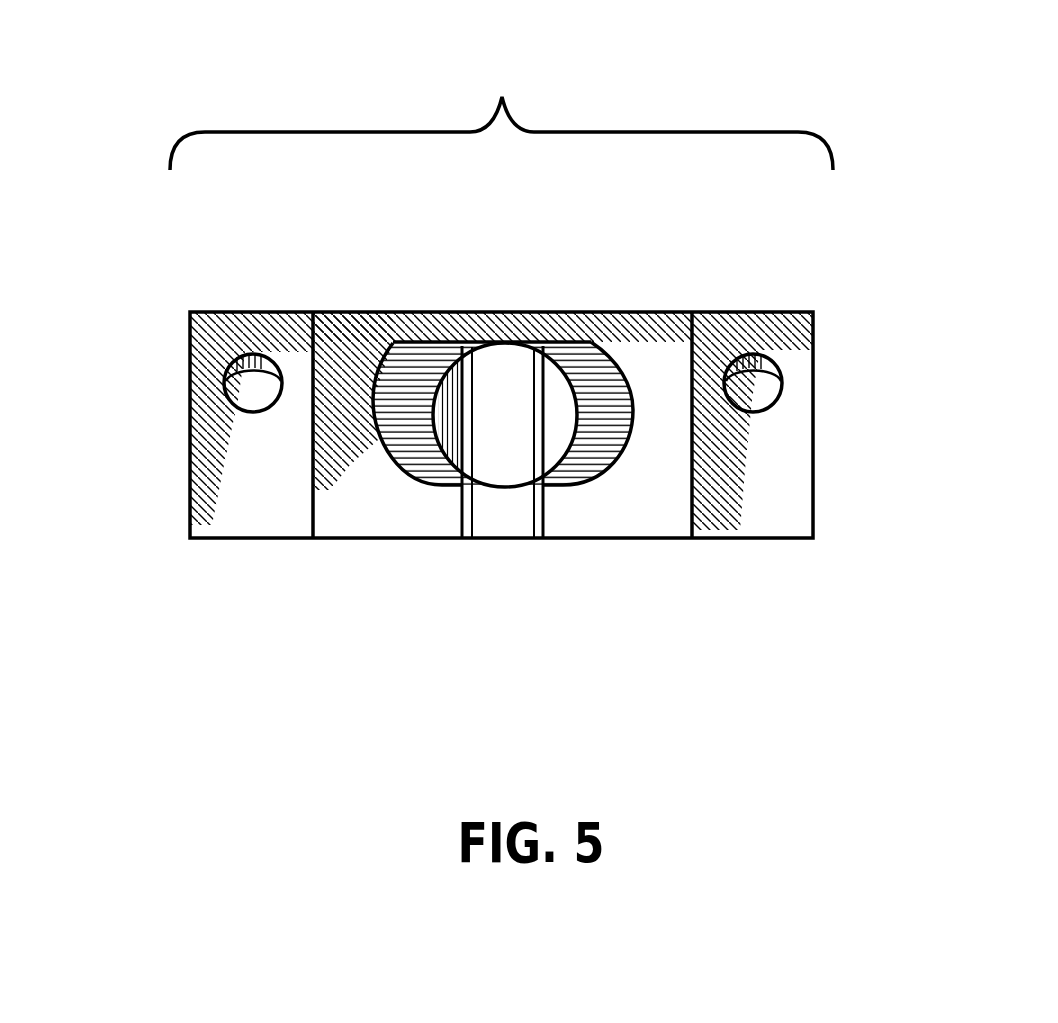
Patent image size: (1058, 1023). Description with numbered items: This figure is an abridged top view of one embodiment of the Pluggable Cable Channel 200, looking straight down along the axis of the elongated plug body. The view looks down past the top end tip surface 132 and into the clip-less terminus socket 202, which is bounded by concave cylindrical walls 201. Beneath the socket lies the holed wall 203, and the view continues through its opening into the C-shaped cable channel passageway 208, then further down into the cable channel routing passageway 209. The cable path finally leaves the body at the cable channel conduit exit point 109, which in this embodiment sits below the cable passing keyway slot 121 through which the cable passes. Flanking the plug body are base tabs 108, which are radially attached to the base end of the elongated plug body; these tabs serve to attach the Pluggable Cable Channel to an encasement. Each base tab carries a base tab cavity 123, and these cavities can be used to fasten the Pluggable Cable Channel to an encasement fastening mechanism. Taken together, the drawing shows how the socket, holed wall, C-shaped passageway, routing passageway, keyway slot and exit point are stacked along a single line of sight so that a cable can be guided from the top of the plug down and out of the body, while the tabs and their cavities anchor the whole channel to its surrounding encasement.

The swivel coupling assembly 200 is at (501, 105).
The concave cylindrical walls 201 is at (368, 390).
The clip-less terminus socket 202 is at (437, 363).
The holed wall 203 is at (405, 343).
The C-shaped cable channel passageway 208 is at (588, 356).
The cable channel routing passageway 209 is at (500, 415).
The base tabs 108 is at (190, 340).
The base tab cavities 123 is at (247, 414).
The top end tip surface 132 is at (367, 500).
The cable channel conduit exit point 109 is at (502, 538).
The cable passing keyway slot 121 is at (545, 538).